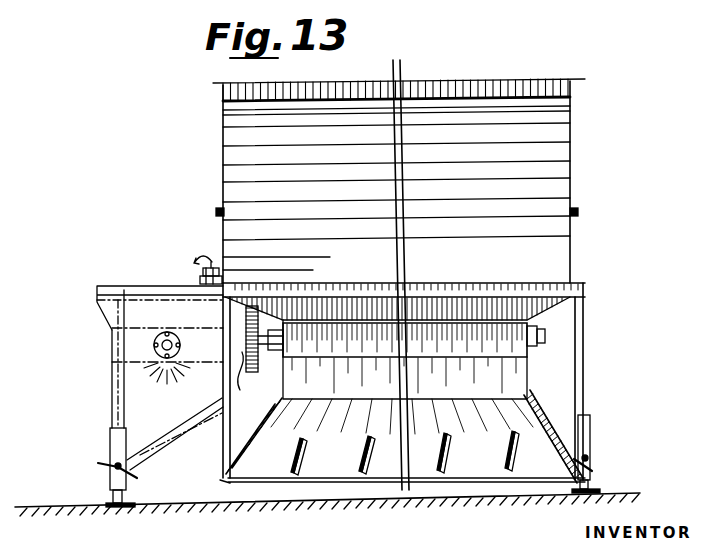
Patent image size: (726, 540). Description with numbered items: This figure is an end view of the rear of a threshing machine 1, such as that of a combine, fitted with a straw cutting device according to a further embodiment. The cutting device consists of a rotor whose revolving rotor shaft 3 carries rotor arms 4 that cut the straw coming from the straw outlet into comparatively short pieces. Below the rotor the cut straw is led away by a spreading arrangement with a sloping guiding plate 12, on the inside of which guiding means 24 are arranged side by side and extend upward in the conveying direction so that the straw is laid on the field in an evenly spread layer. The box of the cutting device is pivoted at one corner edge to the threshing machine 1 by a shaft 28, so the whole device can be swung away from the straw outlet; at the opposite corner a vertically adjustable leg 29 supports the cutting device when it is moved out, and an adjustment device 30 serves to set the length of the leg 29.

The threshing machine 1 is at (223, 145).
The shaft 28 is at (211, 262).
The rotor shaft 3 is at (259, 359).
The rotor arms 4 is at (521, 358).
The guiding plate 12 is at (238, 482).
The guiding means 24 is at (450, 458).
The adjustment device 30 is at (98, 468).
The leg 29 is at (105, 487).